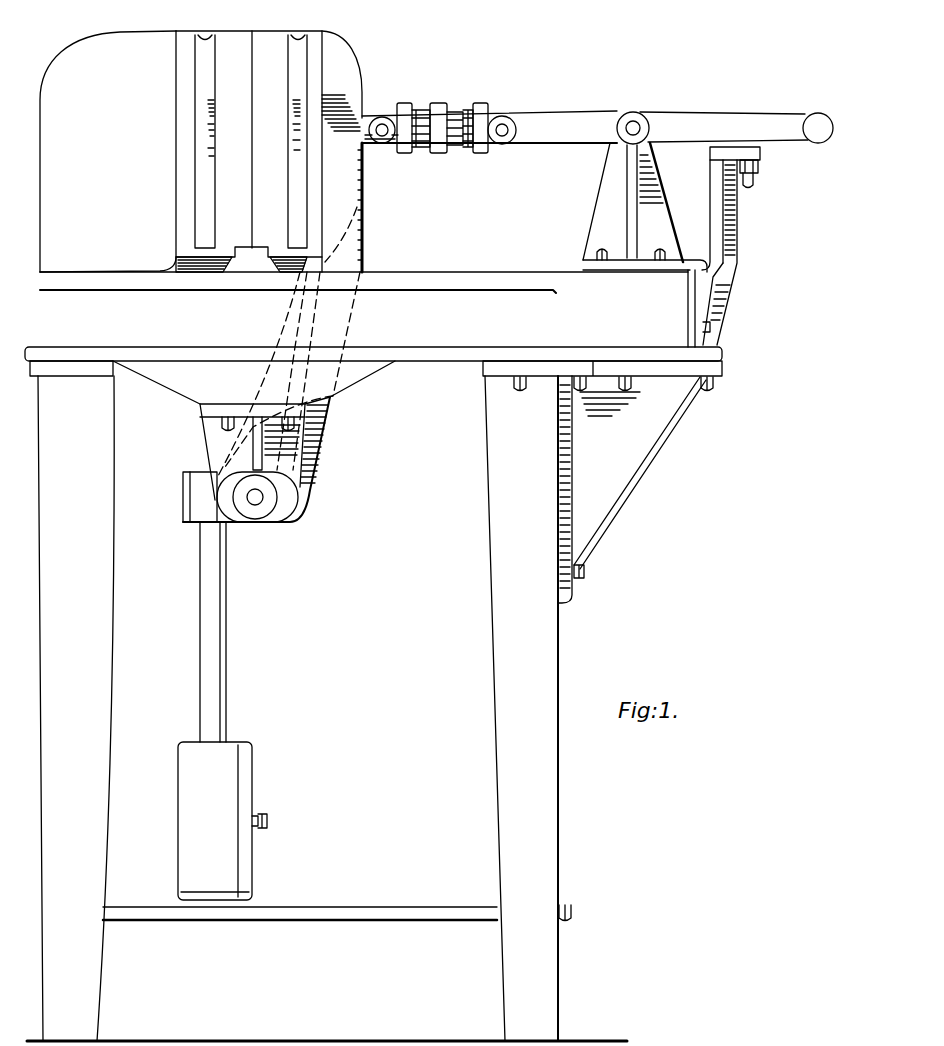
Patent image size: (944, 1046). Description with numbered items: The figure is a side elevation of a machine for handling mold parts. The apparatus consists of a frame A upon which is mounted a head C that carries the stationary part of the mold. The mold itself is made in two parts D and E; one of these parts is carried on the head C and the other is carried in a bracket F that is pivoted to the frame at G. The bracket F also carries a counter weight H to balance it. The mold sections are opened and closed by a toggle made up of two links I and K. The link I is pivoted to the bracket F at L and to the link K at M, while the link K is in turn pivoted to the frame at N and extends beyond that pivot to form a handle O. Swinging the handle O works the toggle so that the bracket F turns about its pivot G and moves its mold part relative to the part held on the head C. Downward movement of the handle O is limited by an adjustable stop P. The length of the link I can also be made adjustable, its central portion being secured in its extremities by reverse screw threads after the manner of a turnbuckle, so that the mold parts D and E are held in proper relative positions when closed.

The frame A is at (373, 656).
The head C is at (201, 151).
The mold part D is at (249, 151).
The mold part E is at (282, 141).
The bracket F is at (177, 553).
The pivot G is at (255, 500).
The counter weight H is at (222, 711).
The link I is at (423, 118).
The link K is at (489, 127).
The pivot L is at (382, 134).
The pivot M is at (502, 134).
The pivot N is at (636, 124).
The handle O is at (812, 117).
The adjustable stop P is at (760, 150).